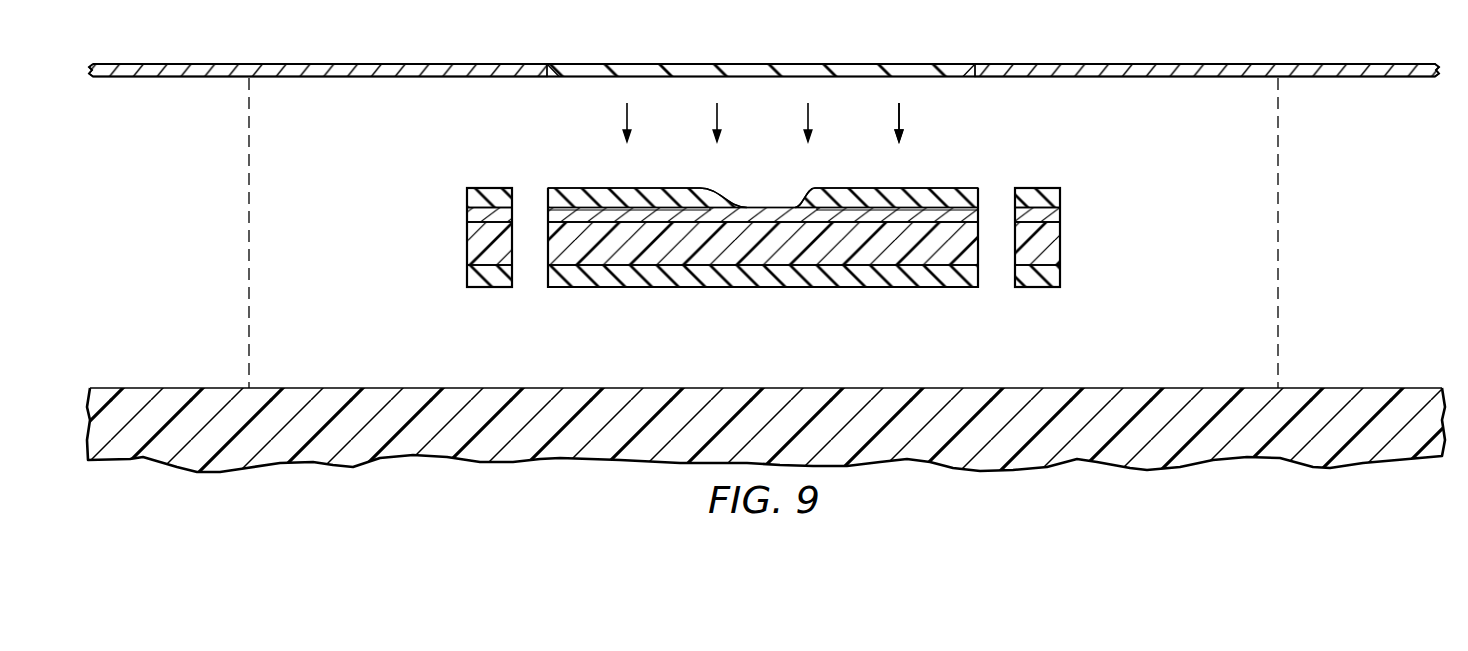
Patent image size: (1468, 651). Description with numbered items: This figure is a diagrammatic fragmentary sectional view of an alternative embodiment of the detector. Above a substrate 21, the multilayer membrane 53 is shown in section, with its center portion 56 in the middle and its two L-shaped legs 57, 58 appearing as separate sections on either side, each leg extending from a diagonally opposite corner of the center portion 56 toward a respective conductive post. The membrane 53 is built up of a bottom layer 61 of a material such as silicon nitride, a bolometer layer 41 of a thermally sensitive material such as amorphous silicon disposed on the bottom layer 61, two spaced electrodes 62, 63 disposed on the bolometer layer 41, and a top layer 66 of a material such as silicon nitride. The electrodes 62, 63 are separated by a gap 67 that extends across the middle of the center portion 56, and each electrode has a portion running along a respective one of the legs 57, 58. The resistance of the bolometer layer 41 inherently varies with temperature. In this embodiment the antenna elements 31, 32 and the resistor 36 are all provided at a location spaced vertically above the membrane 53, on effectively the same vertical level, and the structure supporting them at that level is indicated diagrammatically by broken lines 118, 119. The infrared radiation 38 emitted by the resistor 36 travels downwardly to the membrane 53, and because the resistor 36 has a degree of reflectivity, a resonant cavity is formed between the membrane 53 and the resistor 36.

The substrate 21 is at (1136, 398).
The antenna element 31 is at (318, 68).
The antenna element 32 is at (1205, 68).
The resistor 36 is at (782, 68).
The infrared radiation 38 is at (900, 112).
The bolometer layer 41 is at (735, 255).
The membrane 53 is at (683, 137).
The center portion 56 is at (853, 178).
The L-shaped leg 57 is at (489, 178).
The L-shaped leg 58 is at (1050, 178).
The bottom layer 61 is at (472, 277).
The electrode 62 is at (472, 215).
The electrode 63 is at (1052, 212).
The top layer 66 is at (472, 198).
The gap 67 is at (733, 203).
The broken line 118 is at (249, 272).
The broken line 119 is at (1278, 272).